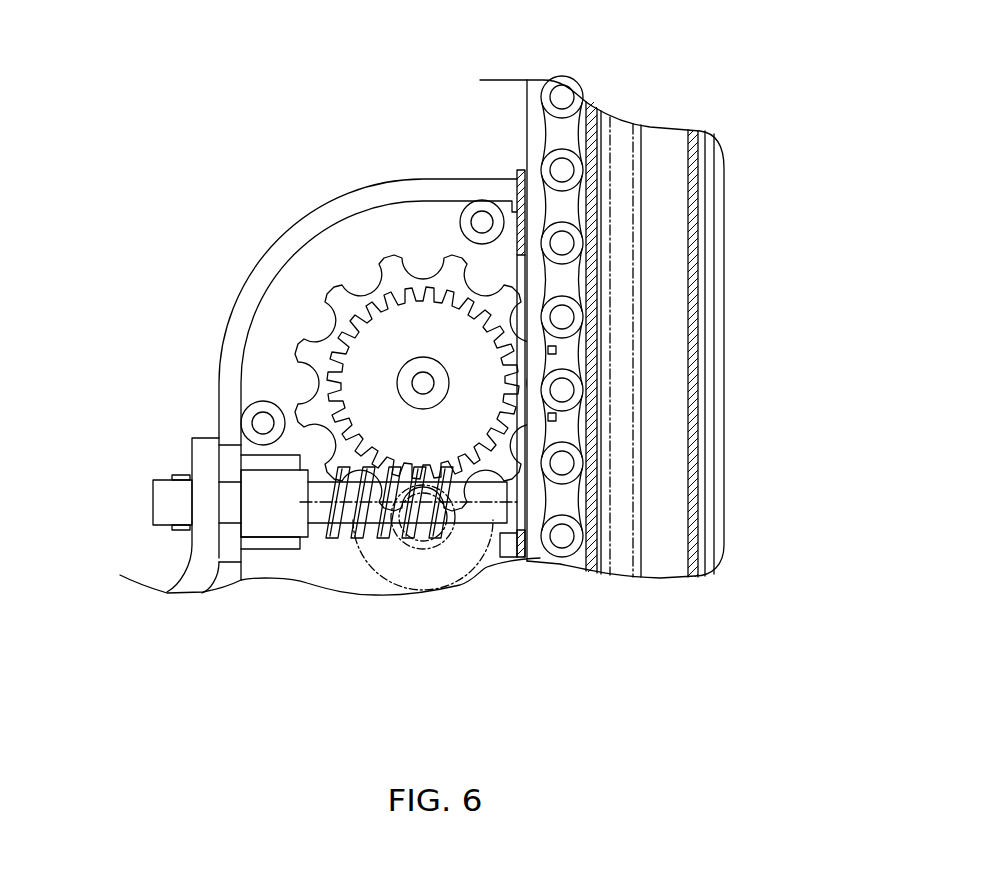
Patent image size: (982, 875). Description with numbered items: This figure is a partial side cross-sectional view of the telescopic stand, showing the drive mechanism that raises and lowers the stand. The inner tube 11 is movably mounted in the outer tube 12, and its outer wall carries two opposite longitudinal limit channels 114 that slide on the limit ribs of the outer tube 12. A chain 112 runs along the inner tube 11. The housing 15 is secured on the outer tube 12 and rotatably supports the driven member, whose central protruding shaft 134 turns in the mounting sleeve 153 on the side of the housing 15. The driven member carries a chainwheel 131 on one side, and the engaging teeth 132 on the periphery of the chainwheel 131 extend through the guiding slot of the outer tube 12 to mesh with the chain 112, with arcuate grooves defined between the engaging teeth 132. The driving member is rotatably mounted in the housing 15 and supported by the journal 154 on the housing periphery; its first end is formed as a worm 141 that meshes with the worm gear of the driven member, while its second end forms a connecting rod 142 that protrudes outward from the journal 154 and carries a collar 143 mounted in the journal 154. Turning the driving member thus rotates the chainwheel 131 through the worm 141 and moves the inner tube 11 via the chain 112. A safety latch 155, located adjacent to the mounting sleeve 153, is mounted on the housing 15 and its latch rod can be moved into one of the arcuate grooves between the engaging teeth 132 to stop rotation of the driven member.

The inner tube 11 is at (533, 125).
The limit channels 114 is at (622, 130).
The chain 112 is at (565, 338).
The outer tube 12 is at (517, 185).
The housing 15 is at (263, 240).
The chainwheel 131 is at (373, 290).
The engaging teeth 132 is at (535, 355).
The protruding shaft 134 is at (403, 368).
The mounting sleeve 153 is at (423, 383).
The worm 141 is at (480, 457).
The connecting rod 142 is at (168, 500).
The collar 143 is at (273, 522).
The journal 154 is at (300, 543).
The safety latch 155 is at (450, 570).